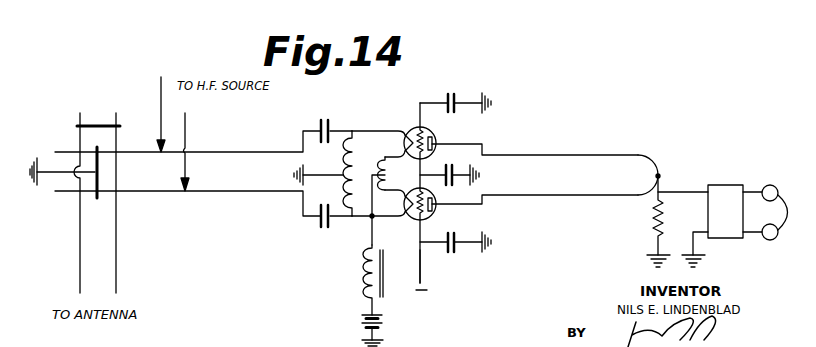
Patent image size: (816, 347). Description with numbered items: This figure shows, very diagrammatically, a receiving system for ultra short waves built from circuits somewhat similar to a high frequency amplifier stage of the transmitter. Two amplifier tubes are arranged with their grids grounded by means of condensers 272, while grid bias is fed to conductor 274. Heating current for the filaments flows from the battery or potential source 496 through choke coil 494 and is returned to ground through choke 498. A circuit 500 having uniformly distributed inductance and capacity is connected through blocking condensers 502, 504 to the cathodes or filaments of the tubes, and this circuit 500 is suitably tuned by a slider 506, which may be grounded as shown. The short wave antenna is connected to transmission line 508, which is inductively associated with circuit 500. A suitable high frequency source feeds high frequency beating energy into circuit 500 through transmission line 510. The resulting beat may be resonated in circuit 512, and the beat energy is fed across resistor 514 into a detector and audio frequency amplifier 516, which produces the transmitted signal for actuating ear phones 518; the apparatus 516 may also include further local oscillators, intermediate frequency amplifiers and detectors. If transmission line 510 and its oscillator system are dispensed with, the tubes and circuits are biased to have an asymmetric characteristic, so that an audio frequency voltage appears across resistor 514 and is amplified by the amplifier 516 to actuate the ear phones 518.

The circuit 500 is at (235, 175).
The blocking condenser 502 is at (323, 117).
The blocking condenser 504 is at (328, 228).
The choke 498 is at (355, 150).
The choke coil 494 is at (364, 277).
The battery 496 is at (380, 330).
The condenser 272 is at (462, 94).
The conductor 274 is at (419, 267).
The slider 506 is at (93, 186).
The transmission line 508 is at (103, 269).
The transmission line 510 is at (177, 128).
The circuit 512 is at (572, 167).
The resistor 514 is at (652, 222).
The detector and audio frequency amplifier 516 is at (725, 185).
The ear phones 518 is at (787, 186).